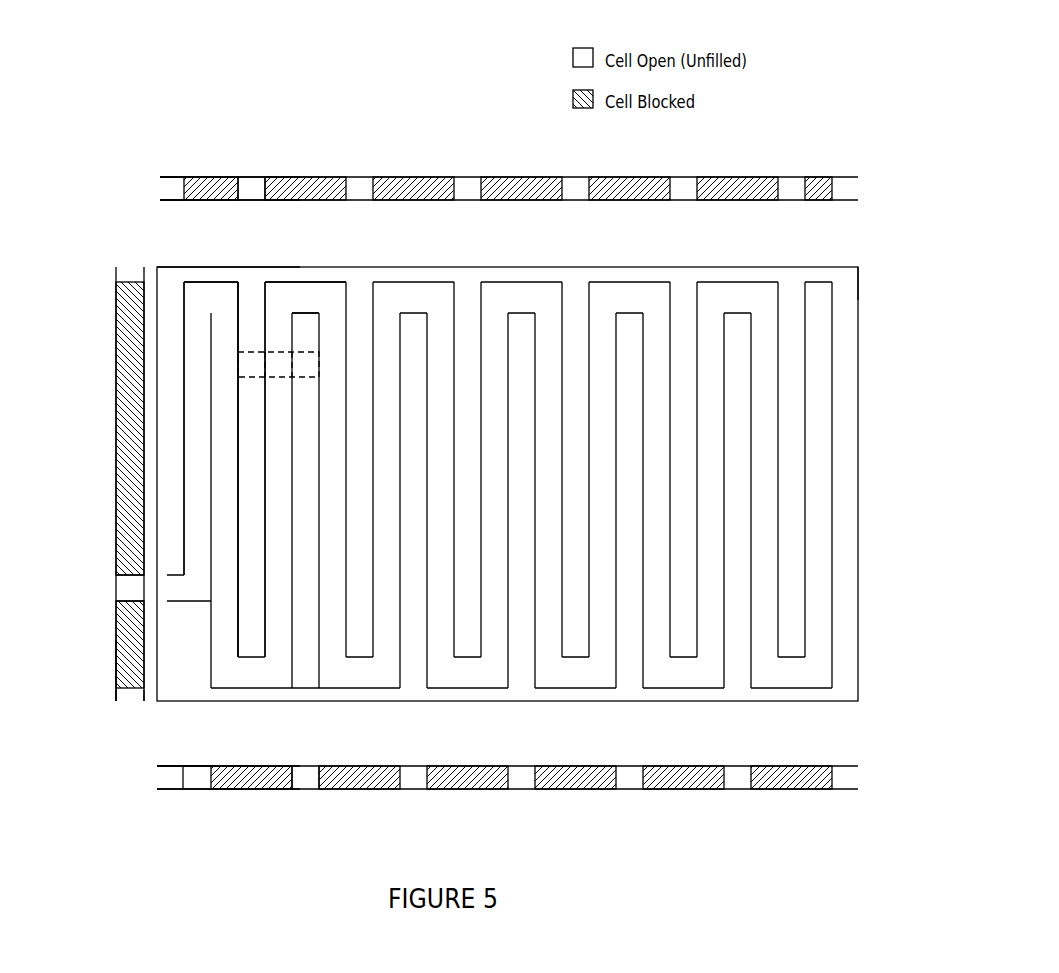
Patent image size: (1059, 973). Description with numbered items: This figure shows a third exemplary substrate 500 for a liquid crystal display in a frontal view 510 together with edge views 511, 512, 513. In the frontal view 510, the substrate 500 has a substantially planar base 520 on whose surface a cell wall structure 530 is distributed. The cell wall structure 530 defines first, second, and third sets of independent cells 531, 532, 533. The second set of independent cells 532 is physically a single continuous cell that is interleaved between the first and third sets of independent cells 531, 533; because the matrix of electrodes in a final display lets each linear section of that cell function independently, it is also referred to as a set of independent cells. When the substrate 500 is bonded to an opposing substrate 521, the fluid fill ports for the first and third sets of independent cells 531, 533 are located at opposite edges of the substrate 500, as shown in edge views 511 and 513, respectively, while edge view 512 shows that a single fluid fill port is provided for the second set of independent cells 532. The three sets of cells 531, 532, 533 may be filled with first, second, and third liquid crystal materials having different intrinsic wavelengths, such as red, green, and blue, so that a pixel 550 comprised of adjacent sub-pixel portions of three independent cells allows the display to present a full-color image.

The substrate 500 is at (859, 415).
The frontal view 510 is at (866, 274).
The edge view 511 is at (866, 179).
The edge view 512 is at (103, 273).
The edge view 513 is at (866, 766).
The base 520 is at (166, 201).
The opposing substrate 521 is at (166, 178).
The cell wall structure 530 is at (211, 280).
The first set of independent cells 531 is at (250, 190).
The second set of independent cells 532 is at (309, 295).
The third set of independent cells 533 is at (307, 685).
The pixel 550 is at (305, 350).